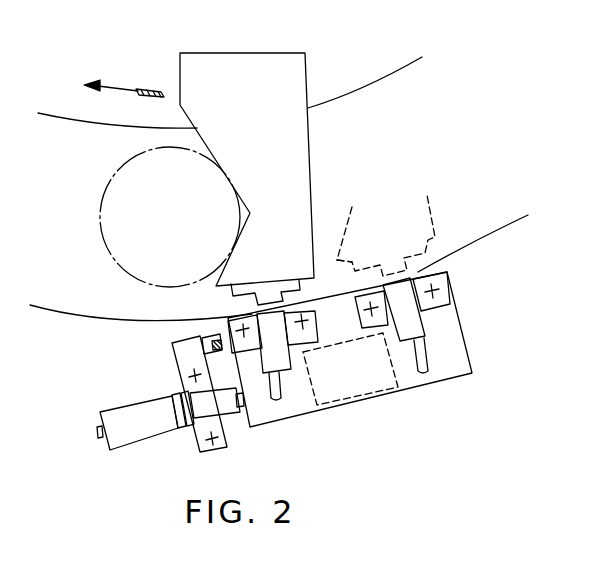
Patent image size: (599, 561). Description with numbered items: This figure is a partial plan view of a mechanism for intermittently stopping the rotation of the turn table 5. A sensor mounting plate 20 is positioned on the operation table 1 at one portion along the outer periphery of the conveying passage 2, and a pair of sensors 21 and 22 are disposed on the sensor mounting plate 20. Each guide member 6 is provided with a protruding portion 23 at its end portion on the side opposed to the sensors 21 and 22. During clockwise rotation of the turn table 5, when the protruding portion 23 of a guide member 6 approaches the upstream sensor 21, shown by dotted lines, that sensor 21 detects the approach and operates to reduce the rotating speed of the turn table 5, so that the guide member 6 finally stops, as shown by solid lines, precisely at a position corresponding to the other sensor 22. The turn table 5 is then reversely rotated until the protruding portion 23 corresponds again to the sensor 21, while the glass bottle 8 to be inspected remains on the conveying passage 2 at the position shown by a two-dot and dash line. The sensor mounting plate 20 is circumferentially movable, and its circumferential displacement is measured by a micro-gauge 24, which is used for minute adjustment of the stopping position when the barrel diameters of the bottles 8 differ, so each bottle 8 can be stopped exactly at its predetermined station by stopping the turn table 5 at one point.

The operation table 1 is at (506, 291).
The conveying passage 2 is at (421, 125).
The turn table 5 is at (403, 58).
The guide member 6 is at (300, 167).
The glass bottle 8 is at (100, 211).
The sensor mounting plate 20 is at (472, 352).
The sensor 21 is at (426, 323).
The sensor 22 is at (296, 372).
The protruding portion 23 is at (238, 297).
The micro-gauge 24 is at (152, 397).